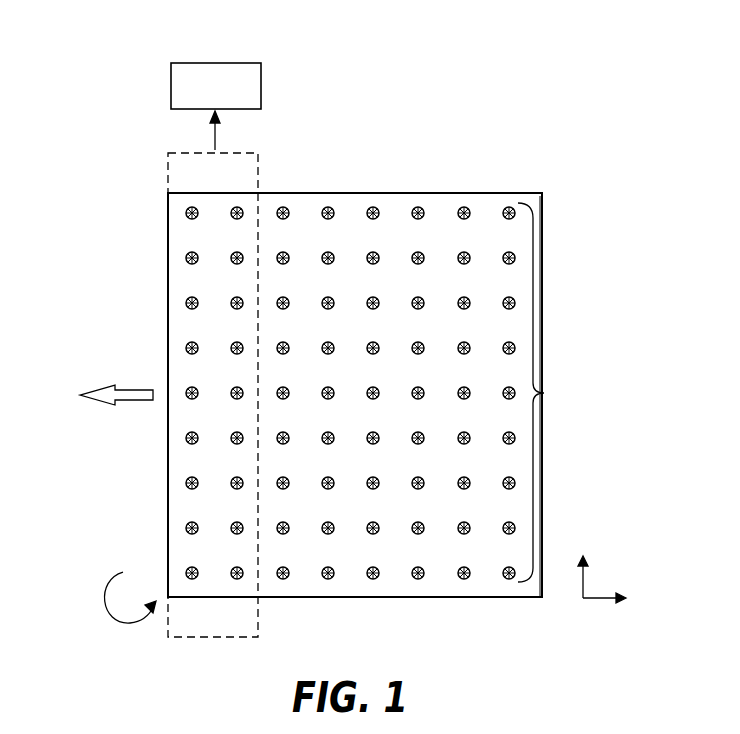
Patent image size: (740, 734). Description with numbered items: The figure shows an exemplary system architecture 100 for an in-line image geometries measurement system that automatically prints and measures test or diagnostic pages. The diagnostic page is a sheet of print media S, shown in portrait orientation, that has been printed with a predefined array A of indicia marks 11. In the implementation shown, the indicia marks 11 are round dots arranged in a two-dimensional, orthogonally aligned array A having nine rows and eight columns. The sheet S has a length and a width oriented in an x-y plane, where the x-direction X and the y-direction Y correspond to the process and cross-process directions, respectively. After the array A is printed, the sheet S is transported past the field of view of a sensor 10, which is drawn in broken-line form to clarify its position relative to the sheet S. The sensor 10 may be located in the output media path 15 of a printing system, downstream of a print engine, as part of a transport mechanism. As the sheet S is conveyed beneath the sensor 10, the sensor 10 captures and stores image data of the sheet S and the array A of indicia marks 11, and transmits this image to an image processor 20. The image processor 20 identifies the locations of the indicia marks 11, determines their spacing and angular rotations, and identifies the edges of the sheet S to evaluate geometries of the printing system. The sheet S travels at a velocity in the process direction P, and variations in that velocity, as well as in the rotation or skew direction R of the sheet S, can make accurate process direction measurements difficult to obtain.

The system architecture 100 is at (133, 56).
The image processor 20 is at (261, 85).
The sensor 10 is at (168, 171).
The indicia marks 11 is at (417, 207).
The output media path 15 is at (52, 405).
The sheet of print media S is at (543, 216).
The array A is at (543, 392).
The process direction P is at (134, 391).
The rotation direction R is at (130, 591).
The x-direction X is at (614, 599).
The y-direction Y is at (582, 563).